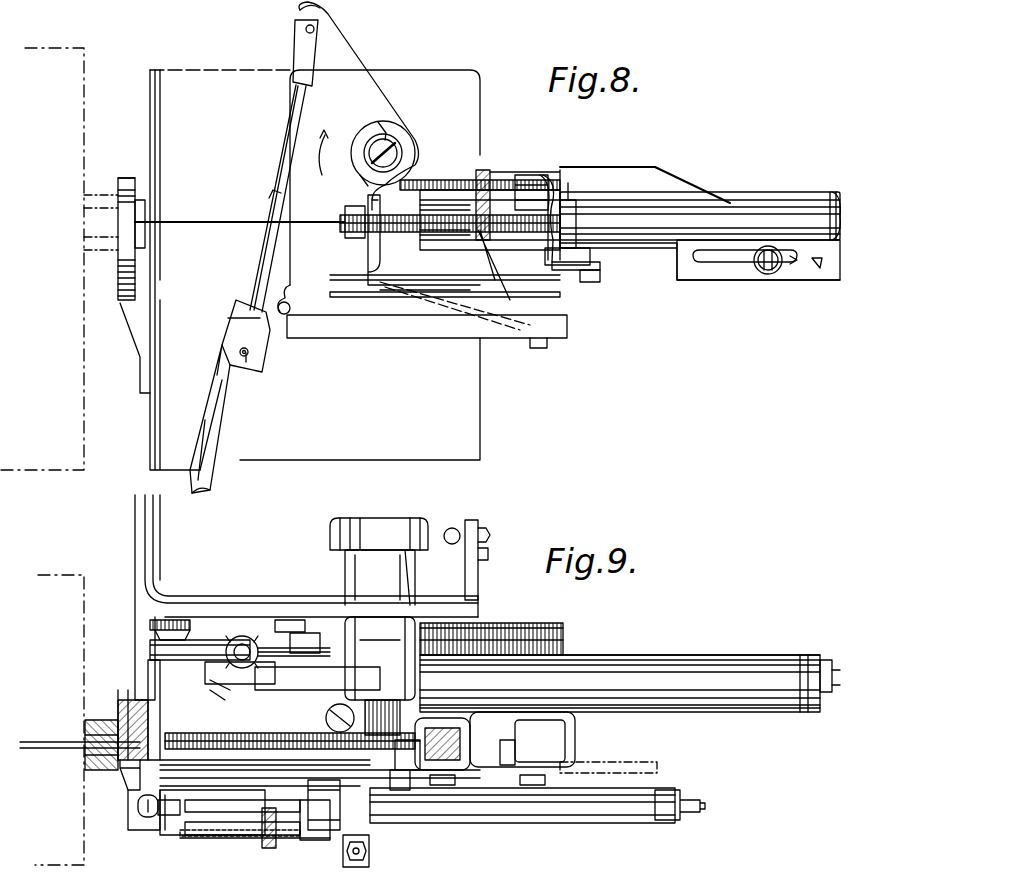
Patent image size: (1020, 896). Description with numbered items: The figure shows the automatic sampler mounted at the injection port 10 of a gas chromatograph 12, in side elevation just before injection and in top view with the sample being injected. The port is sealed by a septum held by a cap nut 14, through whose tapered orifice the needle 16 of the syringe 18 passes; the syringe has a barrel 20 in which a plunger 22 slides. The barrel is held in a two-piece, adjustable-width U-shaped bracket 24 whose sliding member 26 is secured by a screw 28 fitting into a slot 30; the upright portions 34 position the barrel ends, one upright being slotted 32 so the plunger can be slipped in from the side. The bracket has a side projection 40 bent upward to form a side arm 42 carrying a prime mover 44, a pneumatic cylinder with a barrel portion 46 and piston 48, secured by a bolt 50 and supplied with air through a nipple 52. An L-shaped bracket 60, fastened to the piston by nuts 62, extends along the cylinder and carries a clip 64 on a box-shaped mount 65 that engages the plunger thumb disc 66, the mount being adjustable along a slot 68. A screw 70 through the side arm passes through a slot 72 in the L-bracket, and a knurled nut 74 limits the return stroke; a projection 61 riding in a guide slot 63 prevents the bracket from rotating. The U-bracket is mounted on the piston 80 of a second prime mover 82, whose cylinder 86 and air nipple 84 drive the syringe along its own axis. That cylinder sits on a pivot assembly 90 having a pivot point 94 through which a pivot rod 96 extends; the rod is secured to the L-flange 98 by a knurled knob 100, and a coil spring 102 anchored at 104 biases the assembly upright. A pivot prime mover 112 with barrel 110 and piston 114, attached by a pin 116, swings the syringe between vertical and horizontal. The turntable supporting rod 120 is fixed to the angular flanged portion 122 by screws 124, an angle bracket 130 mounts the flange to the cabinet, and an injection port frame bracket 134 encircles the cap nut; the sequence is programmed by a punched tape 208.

In FIG. 8, the injection port 10 is at (120, 283).
In FIG. 9, the injection port 10 is at (125, 675).
In FIG. 8, the gas chromatograph 12 is at (62, 135).
In FIG. 9, the gas chromatograph 12 is at (72, 603).
In FIG. 8, the cap nut 14 is at (98, 202).
In FIG. 9, the cap nut 14 is at (105, 775).
In FIG. 8, the needle 16 is at (300, 226).
In FIG. 9, the needle 16 is at (40, 748).
In FIG. 8, the syringe 18 is at (403, 245).
In FIG. 9, the syringe 18 is at (195, 728).
In FIG. 8, the barrel 20 is at (440, 236).
In FIG. 9, the barrel 20 is at (175, 765).
In FIG. 9, the plunger 22 is at (405, 740).
In FIG. 8, the U-shaped bracket 24 is at (358, 268).
In FIG. 9, the U-shaped bracket 24 is at (142, 662).
In FIG. 8, the sliding member 26 is at (602, 268).
In FIG. 9, the sliding member 26 is at (210, 672).
In FIG. 8, the screw 28 is at (598, 285).
In FIG. 9, the screw 28 is at (345, 730).
In FIG. 9, the slot 30 is at (230, 672).
In FIG. 9, the slot 32 is at (415, 740).
In FIG. 8, the upright portions 34 is at (355, 213).
In FIG. 9, the upright portions 34 is at (138, 700).
In FIG. 8, the side projection 40 is at (418, 272).
In FIG. 9, the side projection 40 is at (255, 867).
In FIG. 8, the side arm 42 is at (562, 270).
In FIG. 9, the side arm 42 is at (325, 850).
In FIG. 8, the prime mover 44 is at (740, 192).
In FIG. 9, the prime mover 44 is at (565, 825).
In FIG. 8, the barrel portion 46 is at (788, 220).
In FIG. 9, the barrel portion 46 is at (612, 820).
In FIG. 8, the piston 48 is at (528, 178).
In FIG. 8, the bolt 50 is at (548, 175).
In FIG. 9, the bolt 50 is at (310, 790).
In FIG. 8, the nipple 52 is at (580, 205).
In FIG. 9, the nipple 52 is at (372, 852).
In FIG. 8, the L-shaped bracket 60 is at (510, 180).
In FIG. 9, the L-shaped bracket 60 is at (252, 778).
In FIG. 8, the projection 61 is at (505, 283).
In FIG. 9, the projection 61 is at (148, 822).
In FIG. 8, the nuts 62 is at (480, 265).
In FIG. 9, the nuts 62 is at (165, 825).
In FIG. 8, the guide slot 63 is at (360, 275).
In FIG. 9, the guide slot 63 is at (195, 835).
In FIG. 9, the clip 64 is at (500, 760).
In FIG. 9, the box-shaped mount 65 is at (535, 712).
In FIG. 8, the plunger thumb disc 66 is at (766, 275).
In FIG. 9, the plunger thumb disc 66 is at (520, 785).
In FIG. 8, the slot 68 is at (792, 262).
In FIG. 8, the screw 70 is at (420, 185).
In FIG. 9, the screw 70 is at (220, 838).
In FIG. 8, the slot 72 is at (472, 175).
In FIG. 8, the knurled nut 74 is at (495, 195).
In FIG. 9, the knurled nut 74 is at (268, 850).
In FIG. 9, the piston 80 is at (292, 668).
In FIG. 8, the second prime mover 82 is at (776, 188).
In FIG. 9, the second prime mover 82 is at (700, 652).
In FIG. 9, the air nipple 84 is at (825, 662).
In FIG. 8, the cylinder 86 is at (720, 198).
In FIG. 9, the cylinder 86 is at (765, 665).
In FIG. 8, the pivot assembly 90 is at (418, 150).
In FIG. 9, the pivot assembly 90 is at (428, 625).
In FIG. 8, the pivot point 94 is at (360, 142).
In FIG. 9, the pivot point 94 is at (420, 690).
In FIG. 8, the pivot rod 96 is at (362, 176).
In FIG. 8, the L-flange 98 is at (447, 80).
In FIG. 9, the L-flange 98 is at (462, 590).
In FIG. 9, the knurled knob 100 is at (437, 530).
In FIG. 9, the coil spring 102 is at (470, 720).
In FIG. 8, the spring end attachment 104 is at (380, 125).
In FIG. 9, the spring end attachment 104 is at (385, 700).
In FIG. 8, the barrel 110 is at (215, 455).
In FIG. 9, the barrel 110 is at (195, 640).
In FIG. 8, the pivot prime mover 112 is at (215, 400).
In FIG. 9, the pivot prime mover 112 is at (208, 632).
In FIG. 8, the piston 114 is at (285, 128).
In FIG. 9, the piston 114 is at (265, 648).
In FIG. 8, the pin 116 is at (305, 32).
In FIG. 9, the pin 116 is at (312, 640).
In FIG. 9, the turntable supporting rod 120 is at (470, 532).
In FIG. 9, the angular flanged portion 122 is at (480, 552).
In FIG. 9, the screws 124 is at (482, 535).
In FIG. 9, the angle bracket 130 is at (128, 735).
In FIG. 8, the injection port frame bracket 134 is at (142, 222).
In FIG. 9, the injection port frame bracket 134 is at (140, 820).
In FIG. 9, the program punched tape 208 is at (135, 870).